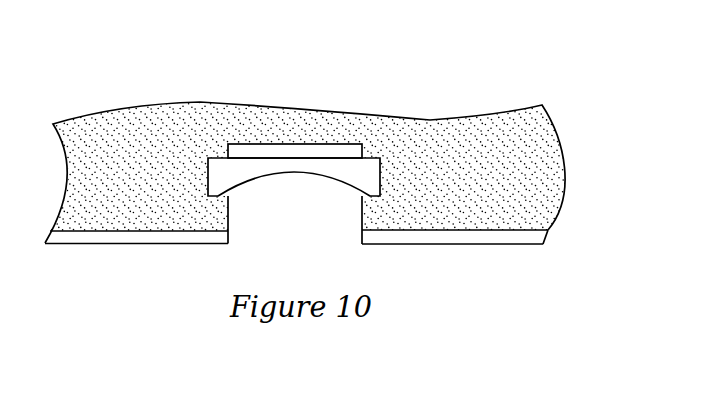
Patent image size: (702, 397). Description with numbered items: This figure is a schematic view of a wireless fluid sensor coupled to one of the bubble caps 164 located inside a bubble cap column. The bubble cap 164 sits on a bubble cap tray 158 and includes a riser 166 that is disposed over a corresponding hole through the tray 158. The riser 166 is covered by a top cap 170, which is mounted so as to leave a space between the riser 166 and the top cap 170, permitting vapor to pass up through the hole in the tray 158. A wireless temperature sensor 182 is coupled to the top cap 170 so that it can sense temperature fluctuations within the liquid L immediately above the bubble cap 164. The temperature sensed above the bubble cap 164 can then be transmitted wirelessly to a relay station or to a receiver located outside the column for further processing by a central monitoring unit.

The bubble cap 164 is at (252, 128).
The bubble cap tray 158 is at (512, 237).
The riser 166 is at (228, 212).
The top cap 170 is at (369, 165).
The wireless temperature sensor 182 is at (292, 151).
The layer L is at (482, 135).